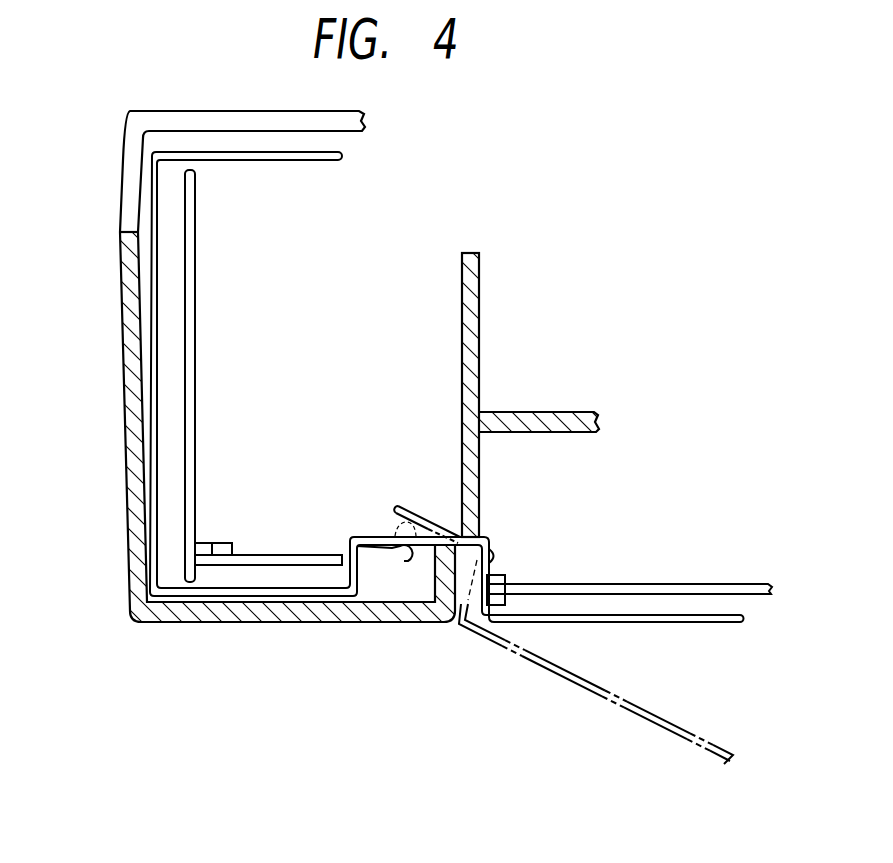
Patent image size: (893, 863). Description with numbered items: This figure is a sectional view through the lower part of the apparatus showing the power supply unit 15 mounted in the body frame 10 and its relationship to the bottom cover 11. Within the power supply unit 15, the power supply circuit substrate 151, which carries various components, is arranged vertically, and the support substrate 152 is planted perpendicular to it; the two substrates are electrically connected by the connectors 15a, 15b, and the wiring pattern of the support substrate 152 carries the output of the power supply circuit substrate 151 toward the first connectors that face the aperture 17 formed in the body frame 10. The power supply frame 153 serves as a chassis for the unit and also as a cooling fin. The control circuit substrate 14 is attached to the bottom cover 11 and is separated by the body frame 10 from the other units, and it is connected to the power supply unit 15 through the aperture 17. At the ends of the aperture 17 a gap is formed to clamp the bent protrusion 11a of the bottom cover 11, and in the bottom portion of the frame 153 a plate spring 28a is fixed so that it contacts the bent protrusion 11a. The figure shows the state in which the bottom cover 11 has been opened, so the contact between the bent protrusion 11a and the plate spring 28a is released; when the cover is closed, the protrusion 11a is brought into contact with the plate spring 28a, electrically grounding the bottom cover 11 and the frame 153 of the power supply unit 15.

The body frame 10 is at (213, 620).
The bottom cover 11 is at (678, 623).
The bent protrusion 11a is at (420, 532).
The control circuit substrate 14 is at (662, 584).
The power supply unit 15 is at (232, 417).
The power supply circuit substrate 151 is at (192, 313).
The support substrate 152 is at (288, 555).
The power supply frame 153 is at (272, 590).
The connector 15a is at (203, 541).
The connector 15b is at (225, 541).
The aperture 17 is at (485, 535).
The plate spring 28a is at (403, 565).